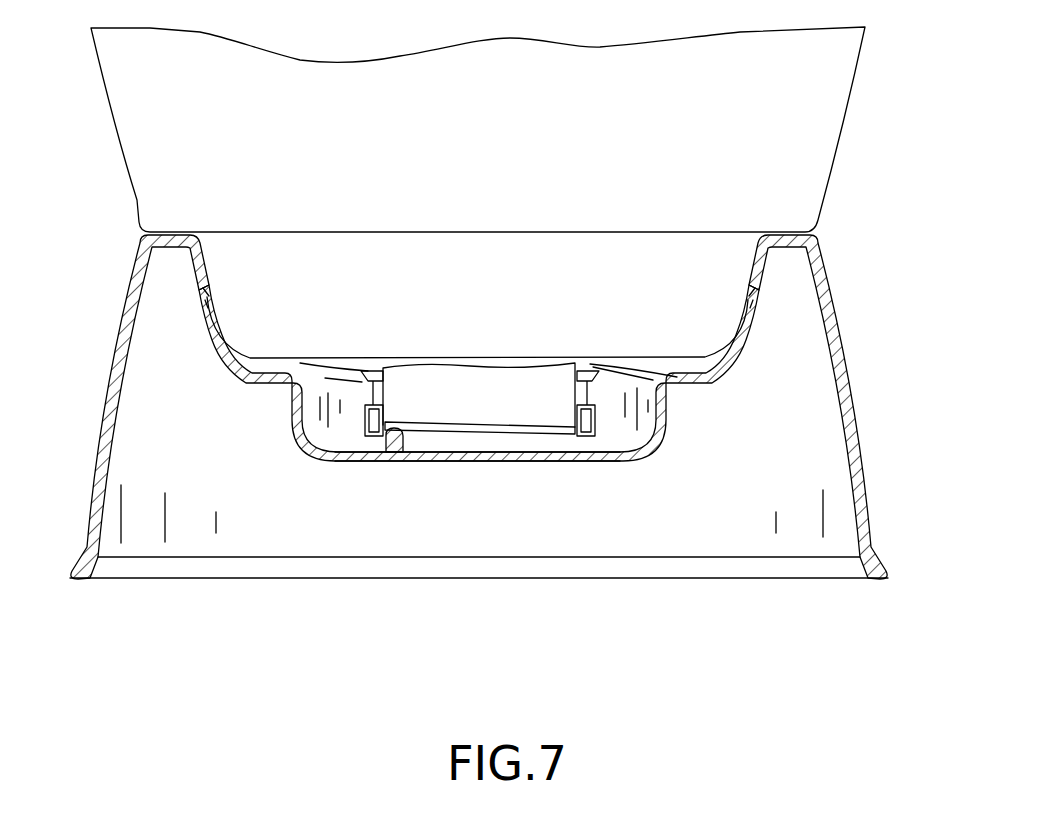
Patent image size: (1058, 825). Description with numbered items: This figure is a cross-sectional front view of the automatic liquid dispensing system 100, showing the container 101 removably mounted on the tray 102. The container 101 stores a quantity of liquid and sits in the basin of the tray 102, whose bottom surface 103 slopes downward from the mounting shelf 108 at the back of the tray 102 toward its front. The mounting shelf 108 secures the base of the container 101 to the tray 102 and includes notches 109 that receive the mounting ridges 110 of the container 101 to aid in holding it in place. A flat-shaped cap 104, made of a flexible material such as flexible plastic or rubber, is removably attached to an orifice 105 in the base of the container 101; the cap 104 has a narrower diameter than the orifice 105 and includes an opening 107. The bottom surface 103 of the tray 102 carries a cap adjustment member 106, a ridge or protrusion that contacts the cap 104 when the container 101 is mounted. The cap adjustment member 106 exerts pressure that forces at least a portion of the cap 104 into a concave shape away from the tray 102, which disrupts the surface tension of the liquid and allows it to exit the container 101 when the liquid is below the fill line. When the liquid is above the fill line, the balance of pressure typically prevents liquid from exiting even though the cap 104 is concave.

The automatic liquid dispensing system 100 is at (862, 215).
The container 101 is at (827, 161).
The tray 102 is at (835, 338).
The bottom surface 103 is at (552, 437).
The cap 104 is at (363, 425).
The orifice 105 is at (617, 440).
The cap adjustment member 106 is at (390, 437).
The opening 107 is at (503, 433).
The mounting shelf 108 is at (246, 387).
The notches 109 is at (207, 293).
The mounting ridges 110 is at (203, 297).